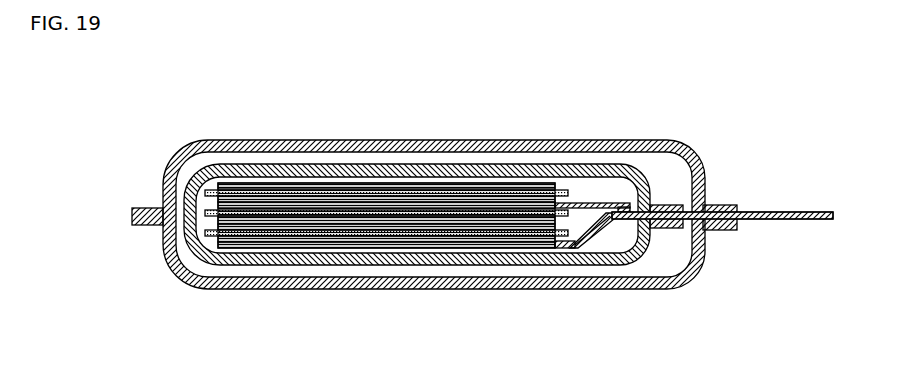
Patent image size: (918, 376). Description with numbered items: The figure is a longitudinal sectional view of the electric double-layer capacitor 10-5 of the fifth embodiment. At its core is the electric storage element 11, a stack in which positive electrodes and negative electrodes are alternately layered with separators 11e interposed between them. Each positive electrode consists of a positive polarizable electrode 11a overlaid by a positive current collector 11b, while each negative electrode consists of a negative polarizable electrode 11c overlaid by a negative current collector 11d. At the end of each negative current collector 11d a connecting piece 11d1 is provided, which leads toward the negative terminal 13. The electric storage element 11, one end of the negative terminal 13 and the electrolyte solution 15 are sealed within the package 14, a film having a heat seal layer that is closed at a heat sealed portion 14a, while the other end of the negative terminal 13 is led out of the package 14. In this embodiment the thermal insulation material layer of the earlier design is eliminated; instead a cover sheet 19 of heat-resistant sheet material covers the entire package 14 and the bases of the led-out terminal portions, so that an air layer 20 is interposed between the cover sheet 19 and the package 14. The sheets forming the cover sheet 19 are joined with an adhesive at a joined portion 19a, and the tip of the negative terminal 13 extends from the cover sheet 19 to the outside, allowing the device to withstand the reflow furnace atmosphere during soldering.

The electric double-layer capacitor 10-5 is at (206, 134).
The electric storage element 11 is at (417, 218).
The positive polarizable electrode 11a is at (277, 190).
The positive current collector 11b is at (317, 196).
The negative polarizable electrode 11c is at (363, 236).
The negative current collector 11d is at (393, 210).
The connecting piece 11d1 is at (598, 217).
The separator 11e is at (447, 222).
The negative terminal 13 is at (780, 212).
The package 14 is at (553, 165).
The heat sealed portion 14a is at (665, 205).
The electrolyte solution 15 is at (620, 190).
The cover sheet 19 is at (590, 141).
The joined portion 19a is at (722, 203).
The air layer 20 is at (512, 158).